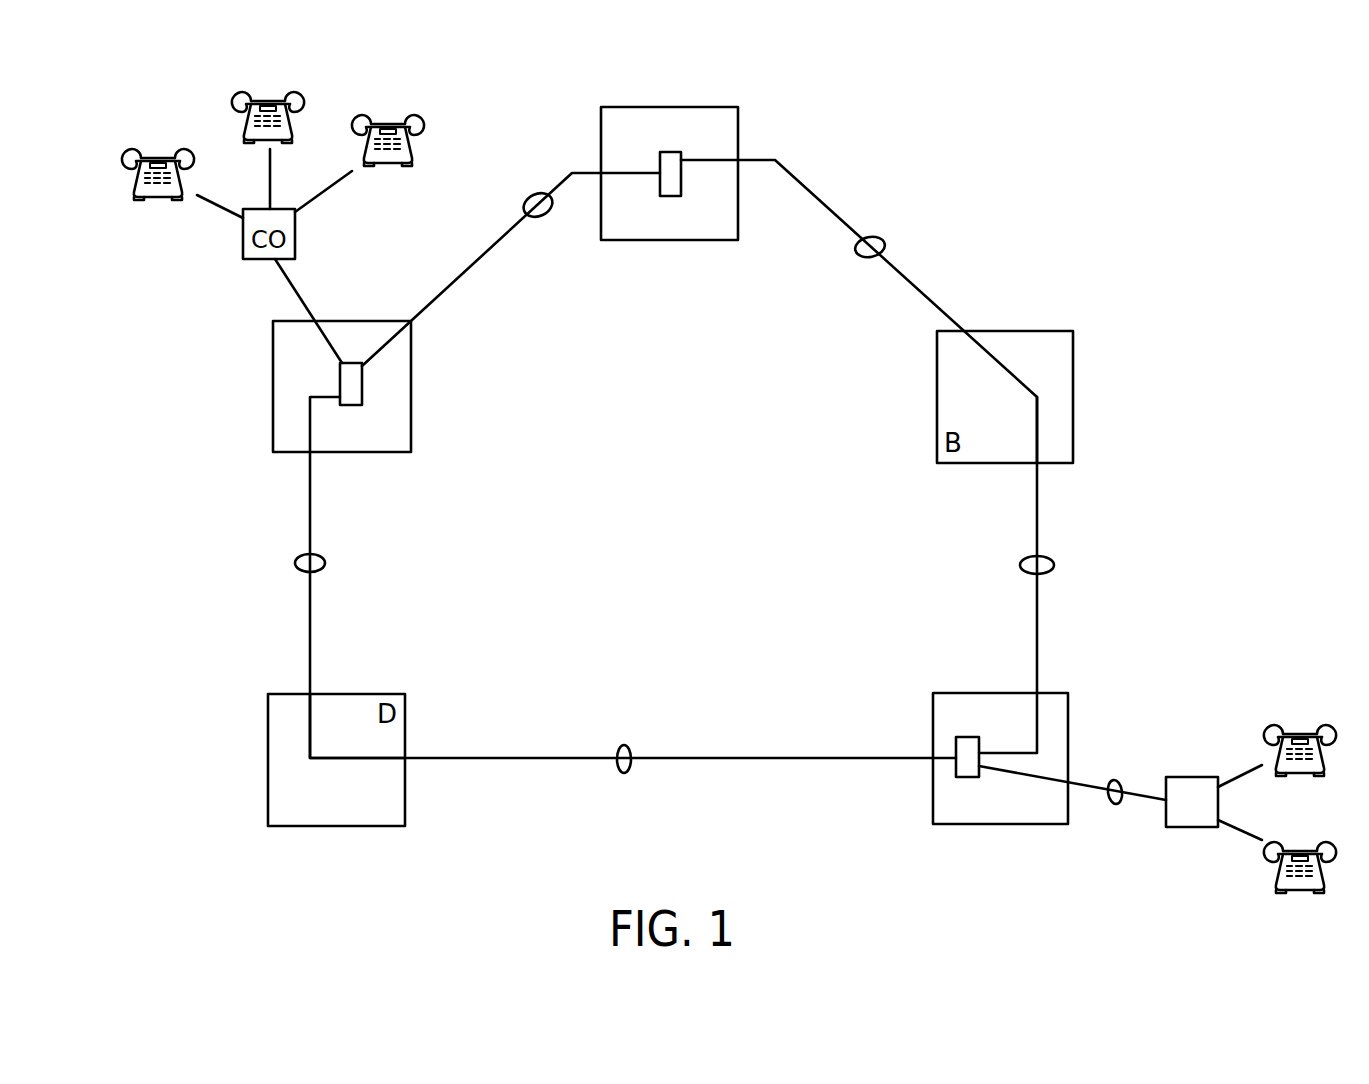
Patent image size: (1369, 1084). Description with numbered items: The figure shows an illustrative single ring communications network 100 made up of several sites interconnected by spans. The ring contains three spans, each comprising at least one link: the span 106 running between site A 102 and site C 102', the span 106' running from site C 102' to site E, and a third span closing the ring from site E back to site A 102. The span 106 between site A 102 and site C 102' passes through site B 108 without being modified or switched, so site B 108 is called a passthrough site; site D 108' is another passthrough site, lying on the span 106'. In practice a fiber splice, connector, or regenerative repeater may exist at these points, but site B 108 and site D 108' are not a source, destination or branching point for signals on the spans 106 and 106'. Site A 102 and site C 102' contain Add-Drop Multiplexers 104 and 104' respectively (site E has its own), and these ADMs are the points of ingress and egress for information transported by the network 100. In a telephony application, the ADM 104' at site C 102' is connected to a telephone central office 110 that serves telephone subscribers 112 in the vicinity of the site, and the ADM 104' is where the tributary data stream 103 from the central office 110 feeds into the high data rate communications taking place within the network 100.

The network 100 is at (683, 484).
The site A 102 is at (695, 156).
The site C 102' is at (1000, 799).
The tributary data stream 103 is at (1115, 804).
The Add-Drop Multiplexer 104 is at (747, 153).
The Add-Drop Multiplexer 104' is at (909, 779).
The span A–C 106 is at (997, 383).
The span C–E 106' is at (415, 691).
The site B 108 is at (1094, 401).
The site D 108' is at (290, 726).
The telephone central office 110 is at (1190, 777).
The telephone subscribers 112 is at (1297, 718).